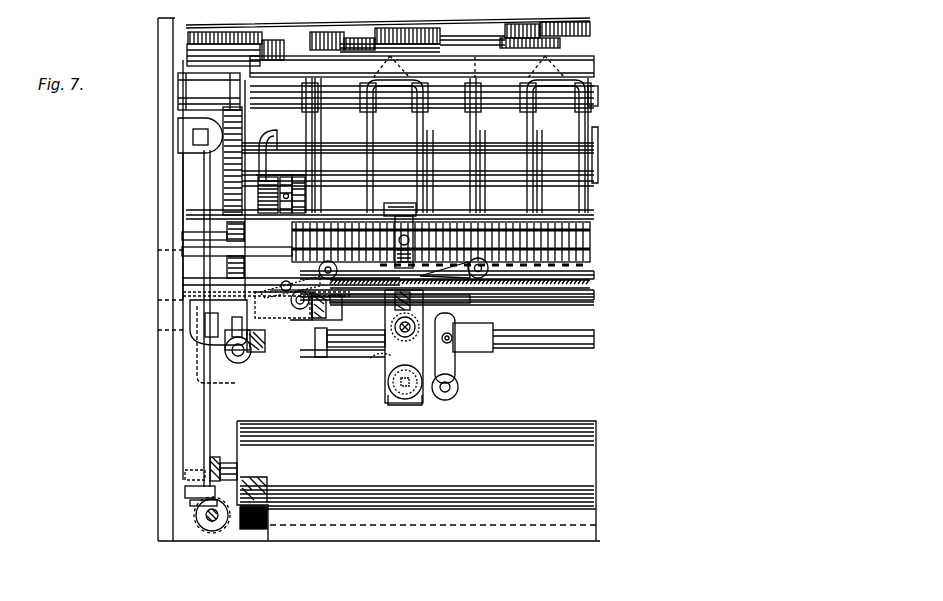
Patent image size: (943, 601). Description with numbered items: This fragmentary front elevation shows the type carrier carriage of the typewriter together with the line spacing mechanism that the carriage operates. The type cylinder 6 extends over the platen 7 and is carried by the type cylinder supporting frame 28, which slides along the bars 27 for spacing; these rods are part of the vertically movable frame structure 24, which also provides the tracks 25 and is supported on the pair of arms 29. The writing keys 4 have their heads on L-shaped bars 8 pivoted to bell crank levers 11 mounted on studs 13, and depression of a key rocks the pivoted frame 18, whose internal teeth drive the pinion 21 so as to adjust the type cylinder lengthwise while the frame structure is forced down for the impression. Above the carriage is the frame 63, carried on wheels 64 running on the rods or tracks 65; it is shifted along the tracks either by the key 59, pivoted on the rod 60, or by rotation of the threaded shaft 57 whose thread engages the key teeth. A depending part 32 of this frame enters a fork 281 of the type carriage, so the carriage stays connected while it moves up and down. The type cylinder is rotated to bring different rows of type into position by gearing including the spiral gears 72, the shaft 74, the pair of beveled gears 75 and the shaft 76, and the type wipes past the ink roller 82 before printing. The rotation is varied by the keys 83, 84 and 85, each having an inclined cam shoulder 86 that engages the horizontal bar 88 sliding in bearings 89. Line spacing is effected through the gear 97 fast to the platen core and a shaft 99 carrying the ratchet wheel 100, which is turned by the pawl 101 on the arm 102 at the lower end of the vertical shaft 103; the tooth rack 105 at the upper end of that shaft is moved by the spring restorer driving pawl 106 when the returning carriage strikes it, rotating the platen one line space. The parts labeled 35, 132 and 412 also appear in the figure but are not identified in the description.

The operating keys 4 is at (378, 44).
The type cylinder 6 is at (386, 386).
The platen 7 is at (560, 420).
The L-shaped bars 8 is at (588, 82).
The bell crank levers 11 is at (465, 103).
The studs 13 is at (397, 346).
The pivoted frame 18 is at (297, 176).
The pinion 21 is at (286, 180).
The frame structure 24 is at (228, 238).
The tracks 25 is at (245, 355).
The bars 27 is at (560, 348).
The type cylinder supporting frame 28 is at (348, 356).
The arms 29 is at (258, 180).
The depending part 32 is at (455, 305).
The cross rail 35 is at (503, 152).
The threaded shaft 57 is at (590, 246).
The key 59 is at (400, 202).
The rod 60 is at (580, 186).
The frame 63 is at (498, 300).
The wheels 64 is at (330, 258).
The tracks 65 is at (597, 276).
The spiral gears 72 is at (385, 338).
The shaft 74 is at (596, 294).
The beveled gears 75 is at (328, 318).
The shaft 76 is at (300, 310).
The ink roller 82 is at (460, 390).
The key 83 is at (193, 34).
The key 84 is at (214, 46).
The key 85 is at (248, 40).
The inclined cam shoulder 86 is at (178, 111).
The horizontal bar 88 is at (191, 138).
The bearings 89 is at (186, 150).
The gear 97 is at (218, 456).
The shaft 99 is at (213, 522).
The ratchet wheel 100 is at (196, 527).
The pawl 101 is at (185, 494).
The arm 102 is at (190, 503).
The vertical shaft 103 is at (204, 433).
The tooth rack 105 is at (278, 330).
The driving pawl 106 is at (280, 284).
The bracket 132 is at (598, 95).
The fork 281 is at (384, 360).
The roller 412 is at (467, 60).